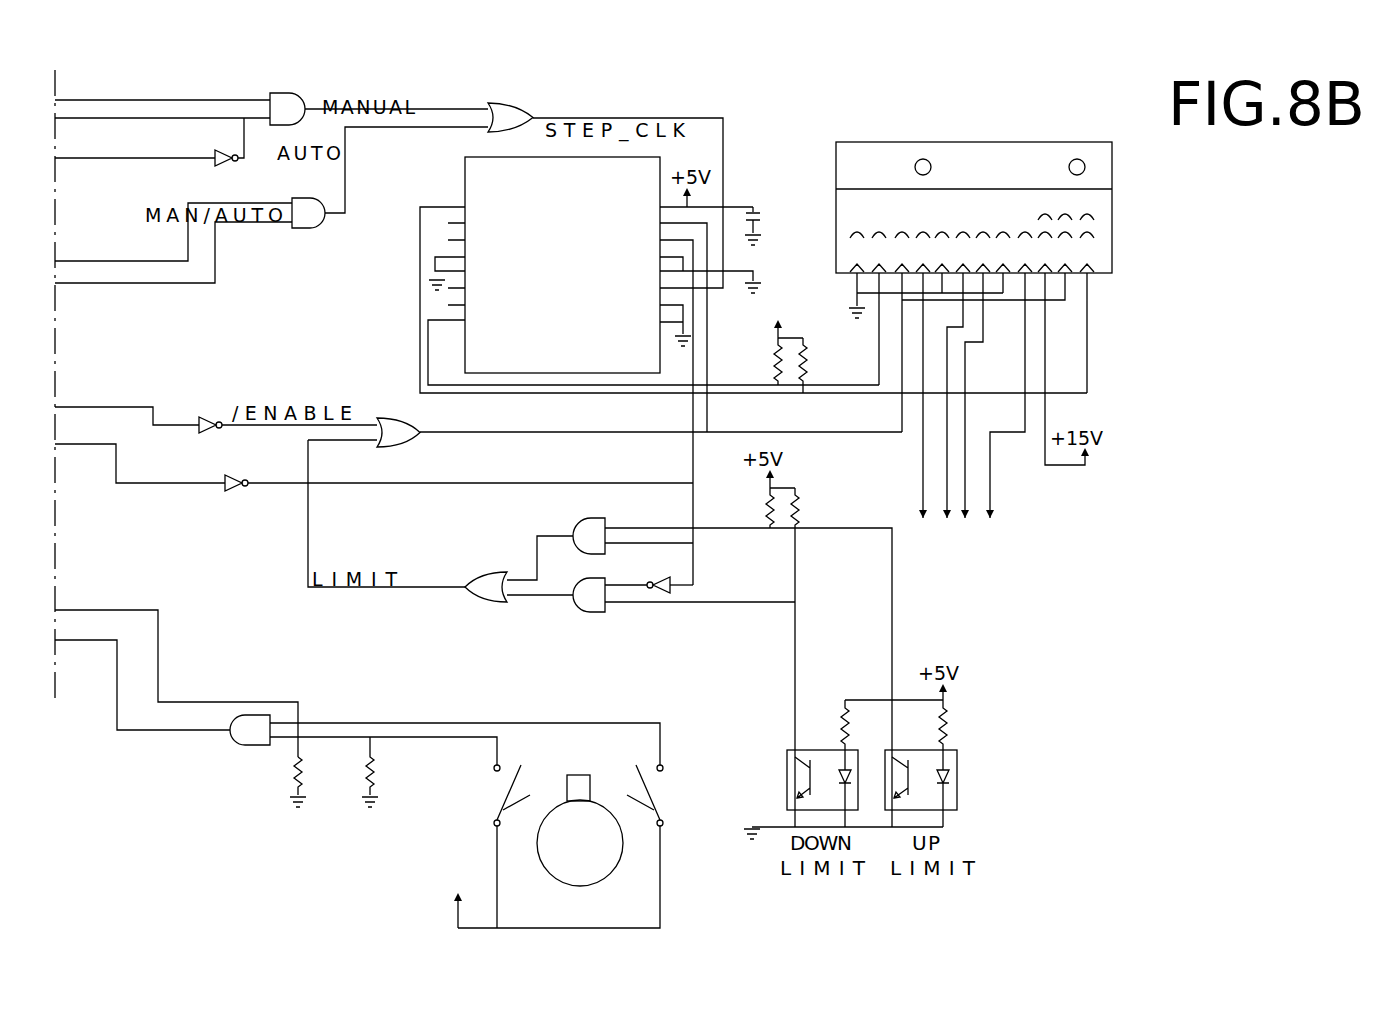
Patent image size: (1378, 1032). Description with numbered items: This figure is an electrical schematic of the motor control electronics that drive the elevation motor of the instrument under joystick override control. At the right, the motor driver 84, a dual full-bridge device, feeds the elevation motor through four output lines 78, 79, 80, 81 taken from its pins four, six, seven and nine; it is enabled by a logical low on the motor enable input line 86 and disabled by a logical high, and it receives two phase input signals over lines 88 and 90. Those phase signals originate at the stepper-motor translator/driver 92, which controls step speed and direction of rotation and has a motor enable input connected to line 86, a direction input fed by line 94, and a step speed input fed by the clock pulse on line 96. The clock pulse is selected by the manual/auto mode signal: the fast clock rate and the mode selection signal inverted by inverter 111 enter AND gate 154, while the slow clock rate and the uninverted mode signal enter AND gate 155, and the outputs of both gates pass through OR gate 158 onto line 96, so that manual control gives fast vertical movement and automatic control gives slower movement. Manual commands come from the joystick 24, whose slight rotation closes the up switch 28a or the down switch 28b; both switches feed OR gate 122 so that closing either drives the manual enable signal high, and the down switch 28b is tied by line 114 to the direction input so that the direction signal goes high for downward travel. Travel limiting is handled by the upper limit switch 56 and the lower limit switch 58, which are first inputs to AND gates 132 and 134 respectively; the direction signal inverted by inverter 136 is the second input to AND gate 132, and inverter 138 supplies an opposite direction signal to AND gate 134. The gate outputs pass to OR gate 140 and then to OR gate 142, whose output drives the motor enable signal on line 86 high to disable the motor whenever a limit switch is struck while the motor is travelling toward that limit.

The AND gate 154 is at (276, 94).
The OR gate 158 is at (490, 104).
The line 96 is at (723, 118).
The motor driver 84 is at (992, 142).
The inverter 111 is at (222, 167).
The AND gate 155 is at (306, 220).
The stepper-motor translator/driver 92 is at (573, 272).
The OR gate 142 is at (395, 418).
The line 88 is at (718, 386).
The line 90 is at (815, 393).
The motor enable input line 86 is at (674, 432).
The line 94 is at (552, 483).
The inverter 136 is at (238, 490).
The AND gate 132 is at (572, 522).
The OR gate 140 is at (490, 573).
The AND gate 134 is at (590, 580).
The inverter 138 is at (668, 582).
The output line 78 is at (920, 455).
The output line 79 is at (922, 498).
The output line 80 is at (966, 507).
The output line 81 is at (992, 496).
The line 114 is at (236, 703).
The OR gate 122 is at (258, 745).
The up switch 28a is at (504, 802).
The down switch 28b is at (652, 800).
The joystick 24 is at (592, 848).
The lower limit switch 58 is at (800, 790).
The upper limit switch 56 is at (905, 785).